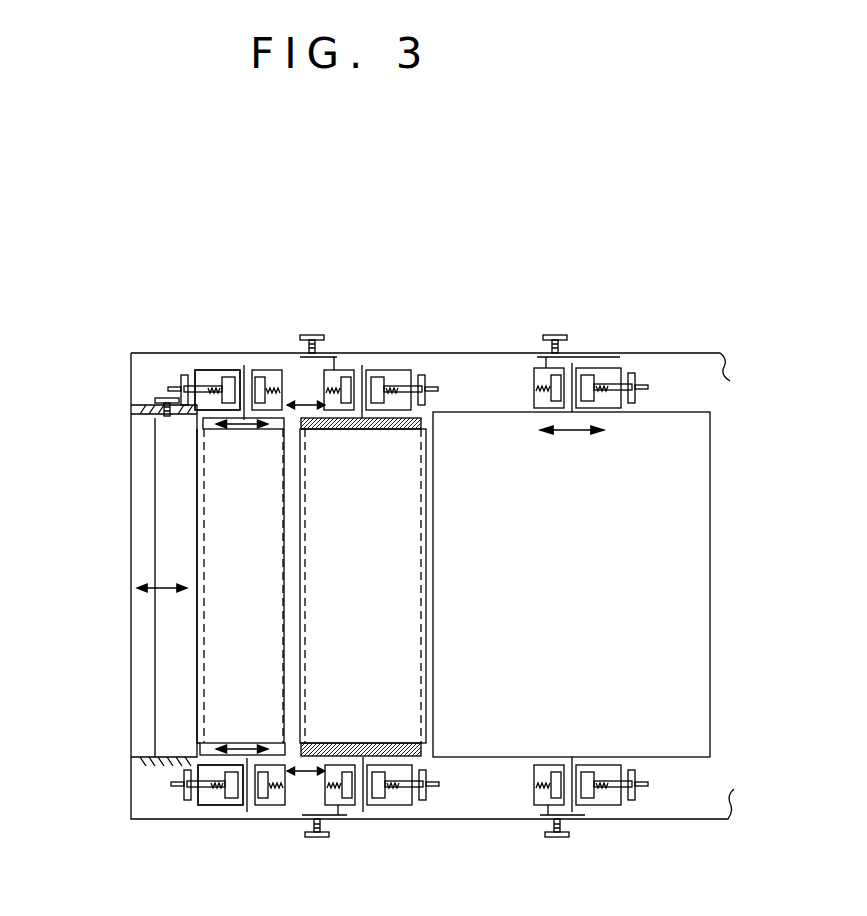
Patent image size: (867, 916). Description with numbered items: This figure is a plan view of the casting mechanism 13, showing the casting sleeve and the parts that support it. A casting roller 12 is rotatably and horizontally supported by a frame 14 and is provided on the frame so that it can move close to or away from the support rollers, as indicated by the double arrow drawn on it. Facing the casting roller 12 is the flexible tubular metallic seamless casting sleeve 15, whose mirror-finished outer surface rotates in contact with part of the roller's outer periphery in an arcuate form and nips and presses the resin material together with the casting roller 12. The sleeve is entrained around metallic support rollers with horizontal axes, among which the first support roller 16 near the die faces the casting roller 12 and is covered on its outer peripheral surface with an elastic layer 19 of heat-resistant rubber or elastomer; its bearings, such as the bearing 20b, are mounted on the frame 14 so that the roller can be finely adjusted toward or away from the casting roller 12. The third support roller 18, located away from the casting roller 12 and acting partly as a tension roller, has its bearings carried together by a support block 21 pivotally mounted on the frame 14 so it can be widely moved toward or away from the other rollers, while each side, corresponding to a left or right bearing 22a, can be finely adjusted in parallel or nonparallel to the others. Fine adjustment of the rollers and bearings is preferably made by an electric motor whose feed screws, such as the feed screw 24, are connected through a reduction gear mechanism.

The casting roller 12 is at (667, 425).
The casting mechanism 13 is at (497, 350).
The frame 14 is at (133, 712).
The casting sleeve 15 is at (198, 480).
The first support roller 16 is at (421, 422).
The third support roller 18 is at (208, 423).
The elastic layer 19 is at (423, 758).
The bearing 20b is at (390, 797).
The support block 21 is at (150, 603).
The bearing 22a is at (346, 376).
The feed screw 24 is at (390, 376).